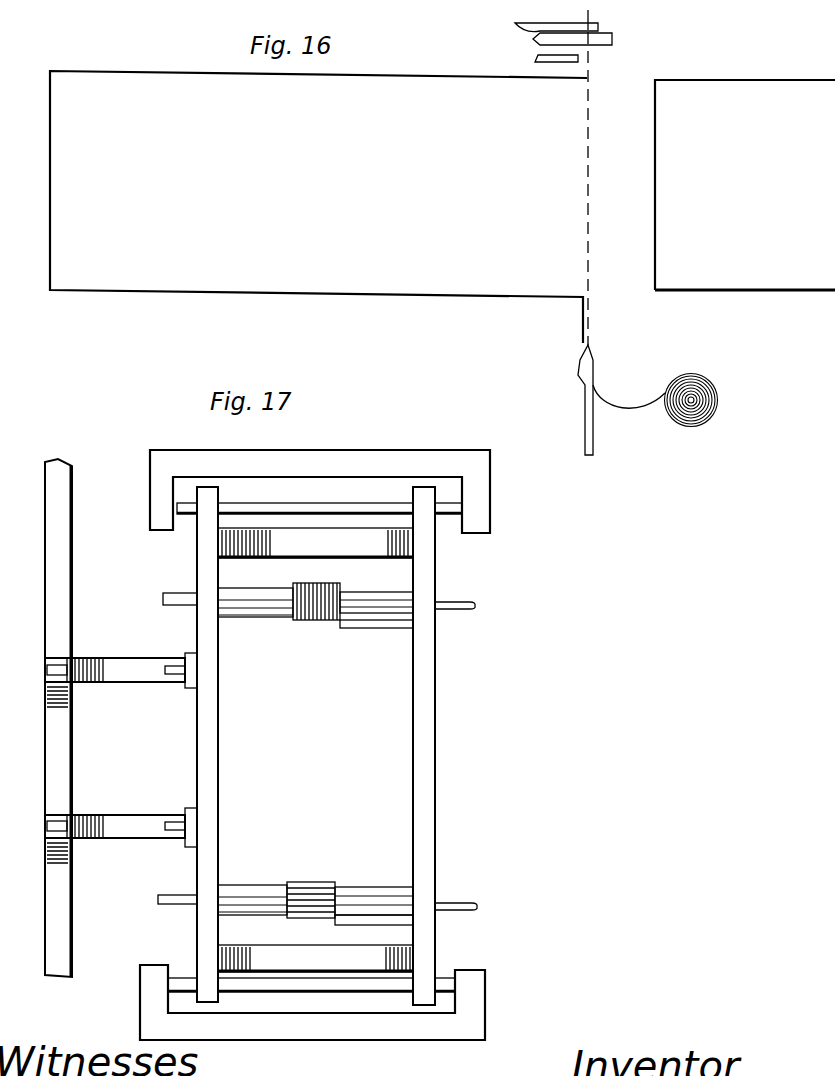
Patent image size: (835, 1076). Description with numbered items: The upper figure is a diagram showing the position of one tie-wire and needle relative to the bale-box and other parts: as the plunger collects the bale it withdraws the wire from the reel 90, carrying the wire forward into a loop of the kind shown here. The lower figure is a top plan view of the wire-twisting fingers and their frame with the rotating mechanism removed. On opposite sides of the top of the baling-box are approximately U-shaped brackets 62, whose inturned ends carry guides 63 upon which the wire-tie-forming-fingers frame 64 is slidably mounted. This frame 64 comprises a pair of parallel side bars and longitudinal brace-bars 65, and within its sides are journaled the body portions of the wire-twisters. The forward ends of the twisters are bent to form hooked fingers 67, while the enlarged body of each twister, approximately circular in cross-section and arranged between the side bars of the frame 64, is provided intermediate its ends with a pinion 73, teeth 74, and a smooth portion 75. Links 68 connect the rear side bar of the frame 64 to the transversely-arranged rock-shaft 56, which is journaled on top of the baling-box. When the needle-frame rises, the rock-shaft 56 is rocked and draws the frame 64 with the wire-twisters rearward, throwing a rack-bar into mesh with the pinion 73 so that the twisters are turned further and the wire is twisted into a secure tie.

In FIG. 17, the rock-shaft 56 is at (72, 737).
In FIG. 17, the U-shaped brackets 62 is at (191, 456).
In FIG. 17, the guides 63 is at (343, 505).
In FIG. 17, the wire-tie-forming-fingers frame 64 is at (200, 555).
In FIG. 17, the longitudinal brace-bars 65 is at (270, 958).
In FIG. 17, the hooked fingers 67 is at (446, 606).
In FIG. 17, the links 68 is at (106, 670).
In FIG. 17, the pinions 73 is at (318, 621).
In FIG. 17, the teeth 74 is at (373, 630).
In FIG. 17, the smooth portion 75 is at (243, 618).
In FIG. 16, the reel 90 is at (706, 386).